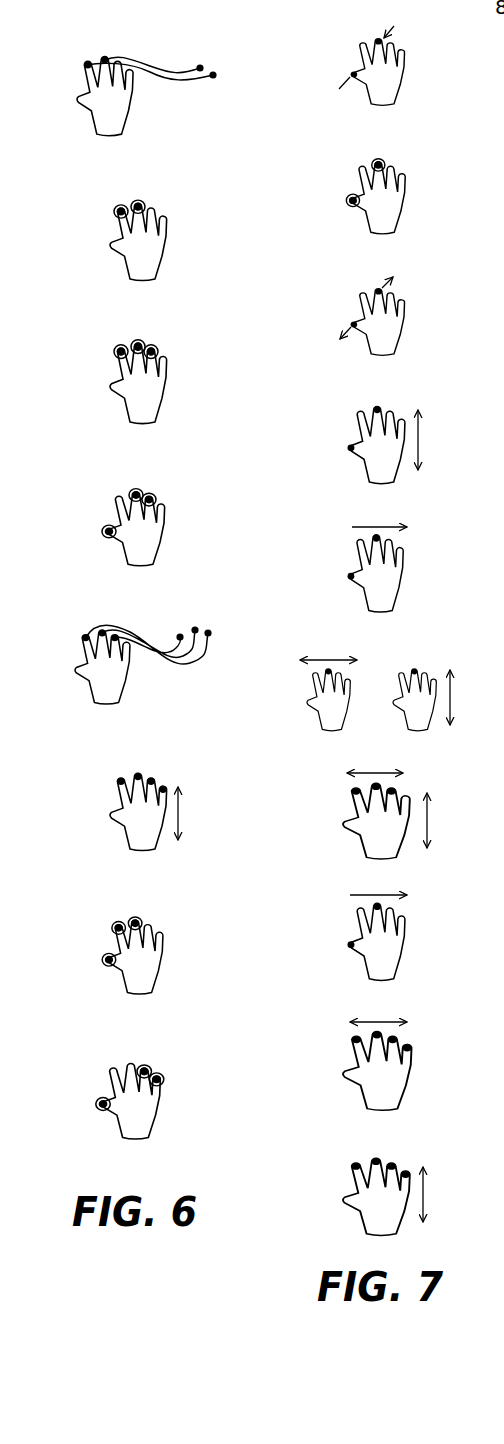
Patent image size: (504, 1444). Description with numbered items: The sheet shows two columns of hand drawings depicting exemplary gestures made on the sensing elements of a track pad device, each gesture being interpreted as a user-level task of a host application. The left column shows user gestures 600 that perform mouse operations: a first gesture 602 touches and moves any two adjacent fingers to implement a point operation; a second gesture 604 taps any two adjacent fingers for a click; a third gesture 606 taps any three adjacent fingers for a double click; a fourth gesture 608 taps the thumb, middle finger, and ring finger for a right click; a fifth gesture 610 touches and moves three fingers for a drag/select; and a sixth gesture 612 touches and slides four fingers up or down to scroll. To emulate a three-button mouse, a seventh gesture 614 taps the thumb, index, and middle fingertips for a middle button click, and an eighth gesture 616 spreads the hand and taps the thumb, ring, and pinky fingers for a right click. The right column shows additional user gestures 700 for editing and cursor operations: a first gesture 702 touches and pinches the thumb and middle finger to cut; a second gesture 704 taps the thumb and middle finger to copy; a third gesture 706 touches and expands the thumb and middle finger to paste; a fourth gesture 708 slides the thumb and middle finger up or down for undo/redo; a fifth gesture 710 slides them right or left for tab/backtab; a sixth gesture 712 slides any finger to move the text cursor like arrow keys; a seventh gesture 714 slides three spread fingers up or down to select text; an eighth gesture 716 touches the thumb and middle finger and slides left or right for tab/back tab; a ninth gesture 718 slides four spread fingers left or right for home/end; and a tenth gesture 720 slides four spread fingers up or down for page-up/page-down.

In FIG. 6, the user gestures 600 is at (79, 52).
In FIG. 6, the first gesture 602 is at (129, 103).
In FIG. 6, the second gesture 604 is at (119, 248).
In FIG. 6, the third gesture 606 is at (119, 389).
In FIG. 6, the fourth gesture 608 is at (117, 535).
In FIG. 6, the fifth gesture 610 is at (127, 673).
In FIG. 6, the sixth gesture 612 is at (123, 819).
In FIG. 6, the seventh gesture 614 is at (115, 963).
In FIG. 6, the eighth gesture 616 is at (117, 1109).
In FIG. 7, the user gestures 700 is at (344, 42).
In FIG. 7, the first gesture 702 is at (360, 75).
In FIG. 7, the second gesture 704 is at (360, 205).
In FIG. 7, the third gesture 706 is at (359, 328).
In FIG. 7, the fourth gesture 708 is at (365, 456).
In FIG. 7, the fifth gesture 710 is at (360, 579).
In FIG. 7, the sixth gesture 712 is at (356, 706).
In FIG. 7, the seventh gesture 714 is at (370, 825).
In FIG. 7, the eighth gesture 716 is at (360, 945).
In FIG. 7, the ninth gesture 718 is at (362, 1073).
In FIG. 7, the tenth gesture 720 is at (368, 1204).